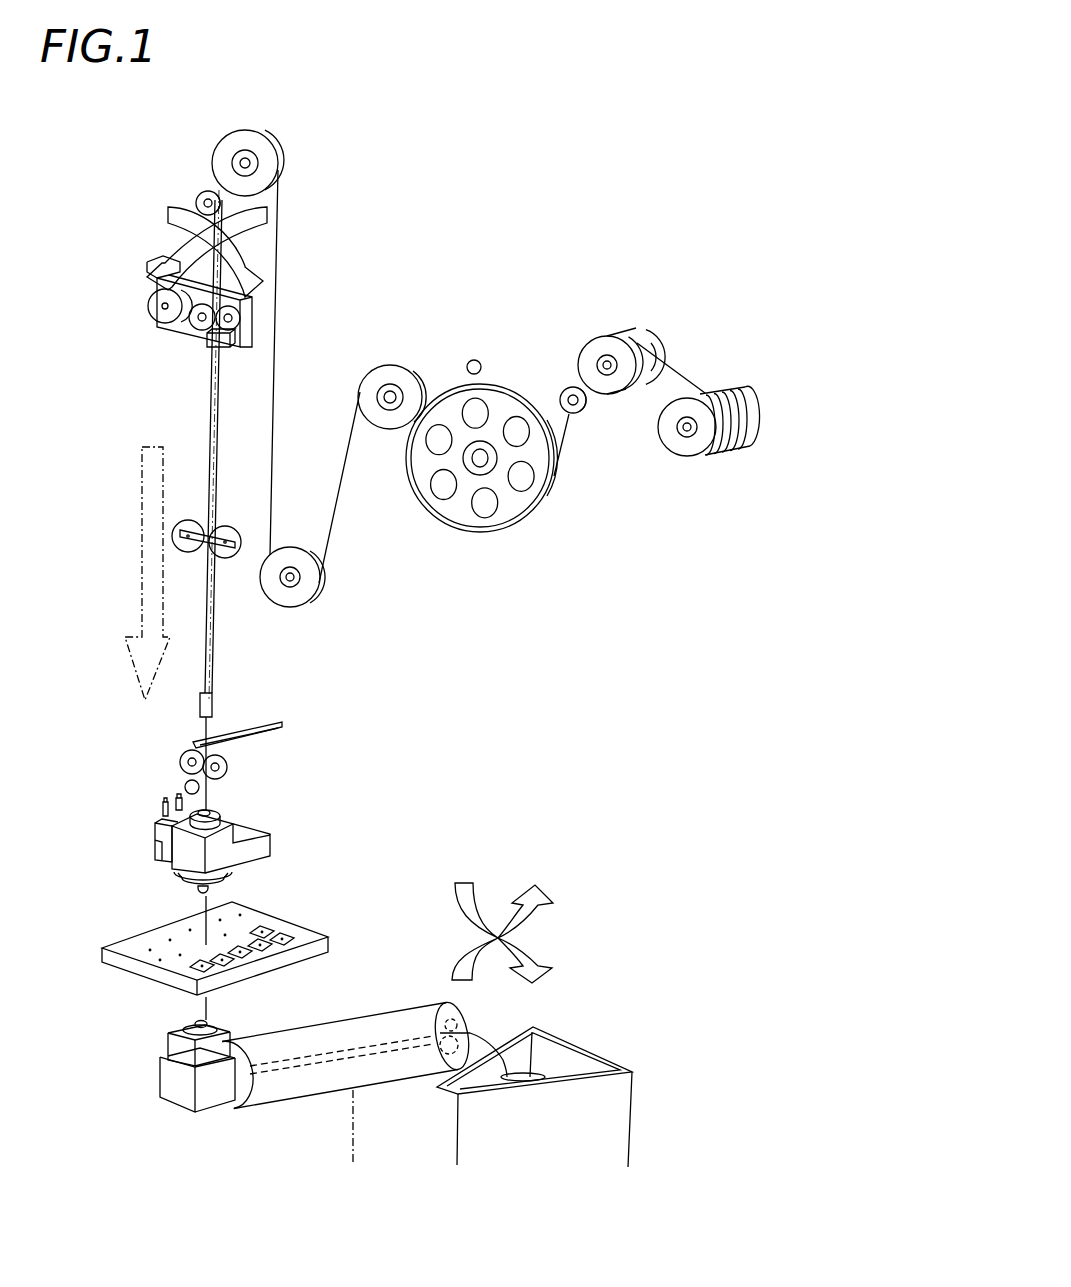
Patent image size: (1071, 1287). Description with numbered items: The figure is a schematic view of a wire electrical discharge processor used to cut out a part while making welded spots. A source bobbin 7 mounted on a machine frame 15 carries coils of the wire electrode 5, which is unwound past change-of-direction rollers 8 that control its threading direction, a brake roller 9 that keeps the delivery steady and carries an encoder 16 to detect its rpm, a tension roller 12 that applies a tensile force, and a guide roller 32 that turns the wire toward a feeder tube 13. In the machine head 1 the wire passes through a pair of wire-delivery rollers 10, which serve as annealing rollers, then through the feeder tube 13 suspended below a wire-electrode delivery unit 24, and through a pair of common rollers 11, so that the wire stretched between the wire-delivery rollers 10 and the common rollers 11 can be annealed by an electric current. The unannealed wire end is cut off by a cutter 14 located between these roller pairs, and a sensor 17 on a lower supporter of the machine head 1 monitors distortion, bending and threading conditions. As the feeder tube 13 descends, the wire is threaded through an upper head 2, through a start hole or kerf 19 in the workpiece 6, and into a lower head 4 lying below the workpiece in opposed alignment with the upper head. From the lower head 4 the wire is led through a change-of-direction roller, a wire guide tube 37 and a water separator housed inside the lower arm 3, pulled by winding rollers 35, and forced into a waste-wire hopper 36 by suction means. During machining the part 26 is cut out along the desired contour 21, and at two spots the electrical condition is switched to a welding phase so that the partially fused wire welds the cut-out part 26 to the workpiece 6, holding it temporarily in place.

The machine head 1 is at (192, 153).
The upper head 2 is at (177, 852).
The lower arm 3 is at (323, 1085).
The lower head 4 is at (185, 1048).
The wire electrode 5 is at (273, 380).
The workpiece 6 is at (145, 953).
The source bobbin 7 is at (694, 452).
The change-of-direction rollers 8 is at (597, 340).
The brake roller 9 is at (471, 514).
The wire-delivery rollers 10 is at (202, 325).
The common rollers 11 is at (228, 767).
The tension roller 12 is at (403, 370).
The feeder tube 13 is at (215, 428).
The cutter 14 is at (263, 717).
The machine frame 15 is at (488, 268).
The encoder 16 is at (480, 360).
The sensor 17 is at (187, 785).
The start hole 19 is at (242, 927).
The desired contour 21 is at (287, 938).
The wire-electrode delivery unit 24 is at (193, 295).
The cut-out part 26 is at (265, 947).
The guide roller 32 is at (265, 157).
The winding rollers 35 is at (445, 1018).
The waste-wire hopper 36 is at (618, 1125).
The wire guide tube 37 is at (283, 1068).